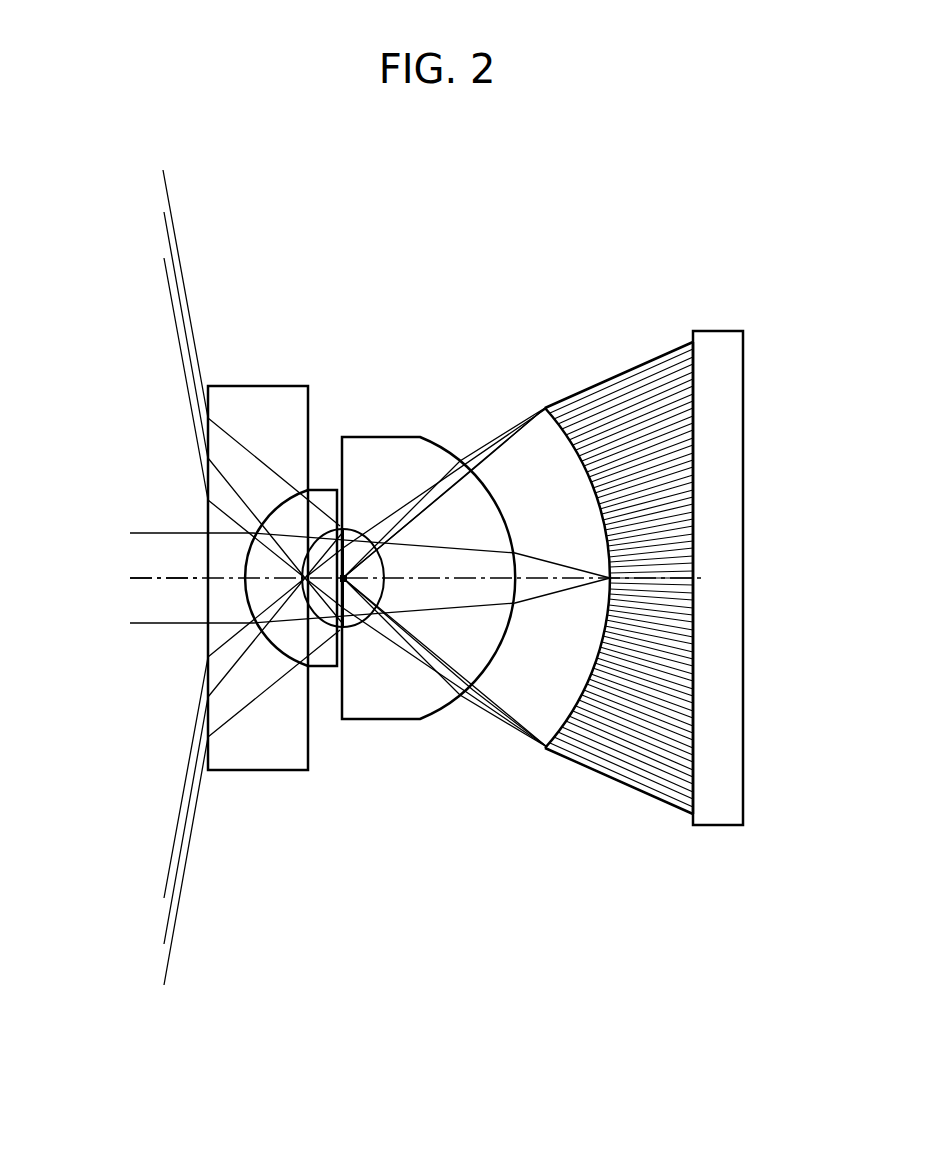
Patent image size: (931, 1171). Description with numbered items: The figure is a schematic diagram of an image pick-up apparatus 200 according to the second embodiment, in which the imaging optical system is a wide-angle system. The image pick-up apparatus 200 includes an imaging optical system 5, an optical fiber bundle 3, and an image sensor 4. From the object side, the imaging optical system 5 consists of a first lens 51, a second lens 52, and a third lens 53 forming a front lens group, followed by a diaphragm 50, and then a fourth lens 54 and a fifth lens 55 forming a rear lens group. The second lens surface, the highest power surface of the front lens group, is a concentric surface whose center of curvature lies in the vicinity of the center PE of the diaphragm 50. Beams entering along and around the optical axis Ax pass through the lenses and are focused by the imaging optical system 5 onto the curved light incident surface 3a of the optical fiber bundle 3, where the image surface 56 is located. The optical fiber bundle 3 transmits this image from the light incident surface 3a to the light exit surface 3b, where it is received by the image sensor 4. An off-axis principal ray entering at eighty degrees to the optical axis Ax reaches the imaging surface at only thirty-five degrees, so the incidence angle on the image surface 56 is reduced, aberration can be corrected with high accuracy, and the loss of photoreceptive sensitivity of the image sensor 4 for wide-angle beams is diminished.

The image pick-up apparatus 200 is at (103, 214).
The imaging optical system 5 is at (465, 292).
The first lens 51 is at (260, 417).
The second lens 52 is at (317, 507).
The third lens 53 is at (331, 515).
The diaphragm 50 is at (343, 522).
The fourth lens 54 is at (358, 540).
The fifth lens 55 is at (418, 460).
The image surface 56 is at (528, 440).
The optical fiber bundle 3 is at (588, 392).
The light incident surface 3a is at (598, 503).
The light exit surface 3b is at (697, 672).
The image sensor 4 is at (745, 403).
The optical axis Ax is at (135, 578).
The center of the diaphragm PE is at (343, 578).